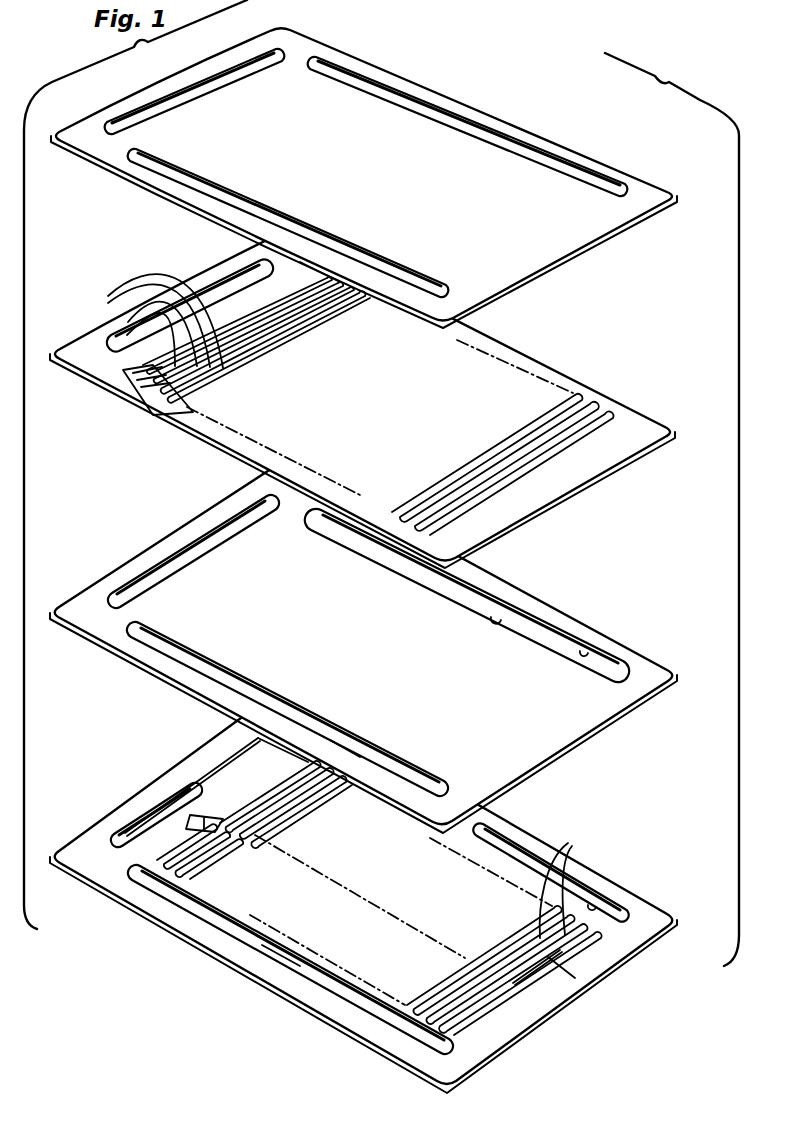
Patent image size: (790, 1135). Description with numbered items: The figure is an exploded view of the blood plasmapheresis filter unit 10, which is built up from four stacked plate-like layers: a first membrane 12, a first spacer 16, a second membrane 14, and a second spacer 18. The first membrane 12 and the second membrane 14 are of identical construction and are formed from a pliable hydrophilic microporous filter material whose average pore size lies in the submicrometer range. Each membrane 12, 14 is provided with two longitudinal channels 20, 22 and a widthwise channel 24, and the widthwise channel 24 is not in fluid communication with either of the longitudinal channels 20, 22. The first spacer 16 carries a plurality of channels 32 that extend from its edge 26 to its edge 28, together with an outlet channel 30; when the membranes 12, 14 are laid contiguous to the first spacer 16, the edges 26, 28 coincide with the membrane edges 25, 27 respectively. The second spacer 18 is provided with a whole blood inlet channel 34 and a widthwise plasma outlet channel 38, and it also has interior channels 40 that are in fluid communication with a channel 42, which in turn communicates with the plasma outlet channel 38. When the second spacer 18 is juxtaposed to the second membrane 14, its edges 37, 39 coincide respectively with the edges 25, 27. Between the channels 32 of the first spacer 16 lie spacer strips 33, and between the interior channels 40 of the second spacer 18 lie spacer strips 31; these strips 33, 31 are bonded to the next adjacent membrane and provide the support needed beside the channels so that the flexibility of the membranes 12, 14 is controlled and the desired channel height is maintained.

The filter unit 10 is at (381, 483).
The first membrane 12 is at (483, 112).
The second membrane 14 is at (579, 617).
The first spacer 16 is at (547, 362).
The second spacer 18 is at (521, 830).
The longitudinal channel 20 is at (187, 171).
The longitudinal channel 22 is at (398, 85).
The widthwise channel 24 is at (173, 96).
The edge 25 is at (590, 658).
The edge 26 is at (320, 280).
The edge 27 is at (346, 752).
The edge 28 is at (153, 387).
The outlet channel 30 is at (127, 320).
The spacer strips 31 is at (548, 957).
The channels 32 is at (110, 296).
The spacer strips 33 is at (137, 371).
The whole blood inlet channel 34 is at (350, 993).
The edge 37 is at (595, 907).
The plasma outlet channel 38 is at (140, 833).
The edge 39 is at (280, 960).
The interior channels 40 is at (570, 879).
The channel 42 is at (200, 818).